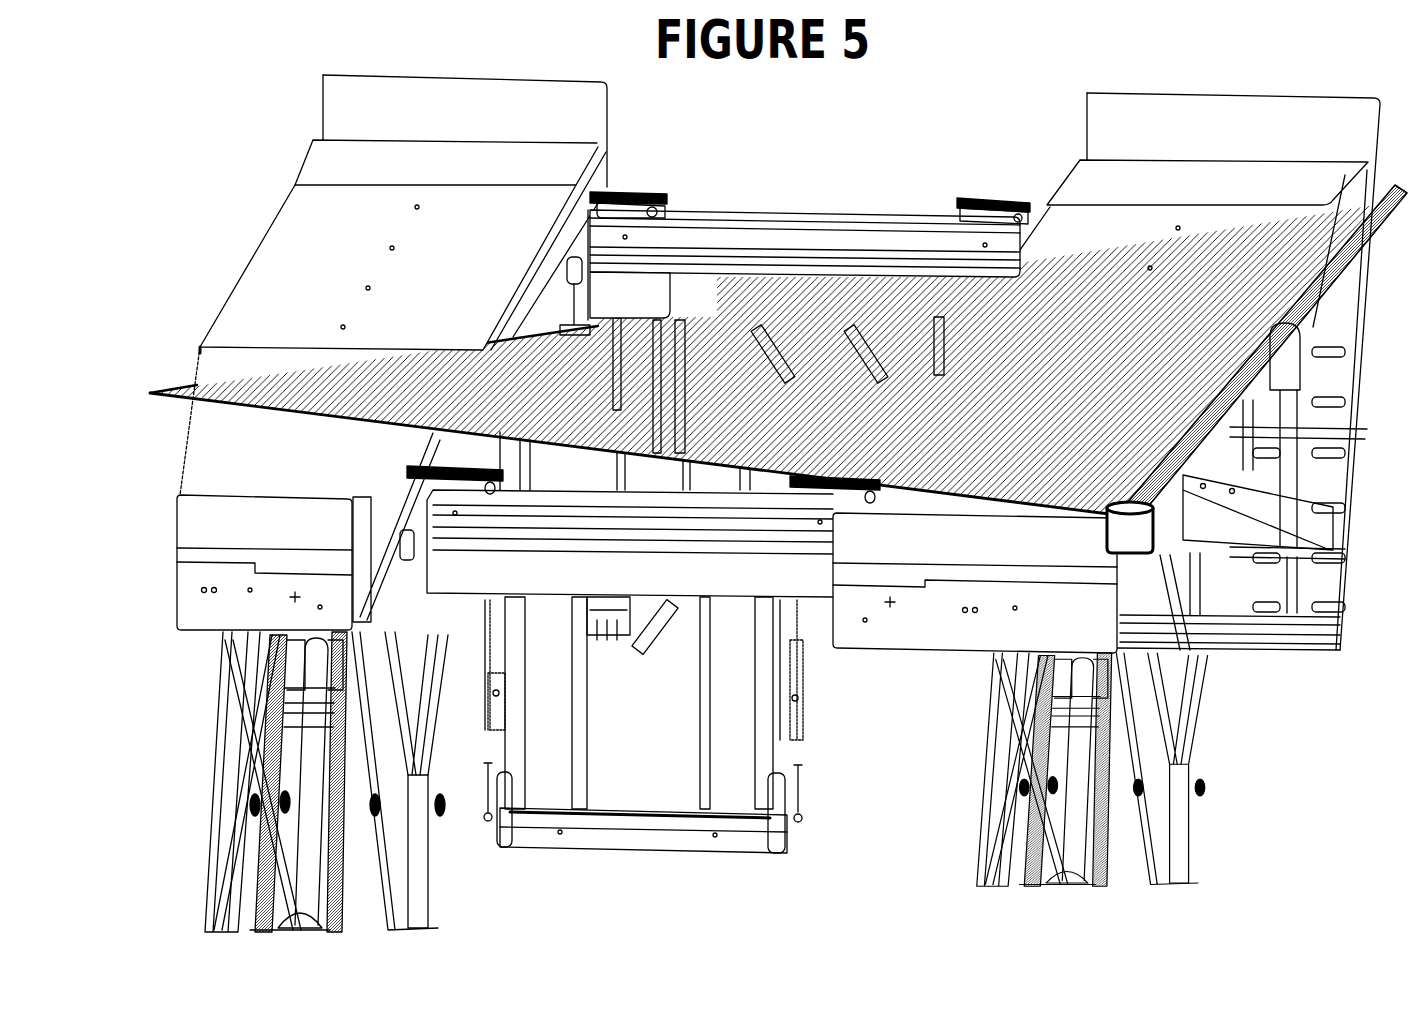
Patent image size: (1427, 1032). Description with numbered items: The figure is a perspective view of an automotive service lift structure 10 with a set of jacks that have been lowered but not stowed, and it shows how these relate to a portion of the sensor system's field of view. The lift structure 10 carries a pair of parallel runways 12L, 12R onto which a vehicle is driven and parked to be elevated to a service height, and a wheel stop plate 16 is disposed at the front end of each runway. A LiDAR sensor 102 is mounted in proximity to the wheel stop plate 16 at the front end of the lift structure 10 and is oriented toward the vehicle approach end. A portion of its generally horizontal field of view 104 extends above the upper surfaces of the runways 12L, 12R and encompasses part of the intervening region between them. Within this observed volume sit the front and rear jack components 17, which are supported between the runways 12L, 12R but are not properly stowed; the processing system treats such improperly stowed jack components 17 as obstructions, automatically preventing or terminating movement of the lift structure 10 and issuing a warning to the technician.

The automotive service lift structure 10 is at (769, 503).
The right lift runway 12R is at (337, 220).
The left lift runway 12L is at (1117, 227).
The wheel stop plate 16 is at (223, 507).
The jack components 17 is at (710, 210).
The LiDAR sensor 102 is at (1127, 543).
The field of view 104 is at (713, 360).